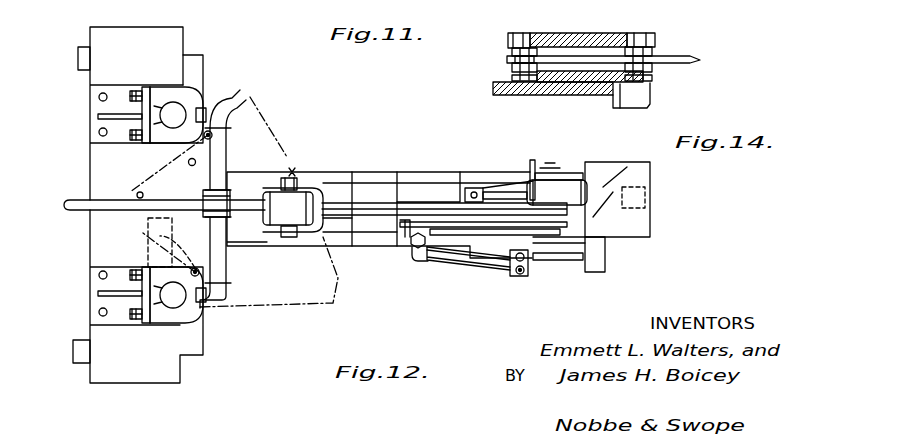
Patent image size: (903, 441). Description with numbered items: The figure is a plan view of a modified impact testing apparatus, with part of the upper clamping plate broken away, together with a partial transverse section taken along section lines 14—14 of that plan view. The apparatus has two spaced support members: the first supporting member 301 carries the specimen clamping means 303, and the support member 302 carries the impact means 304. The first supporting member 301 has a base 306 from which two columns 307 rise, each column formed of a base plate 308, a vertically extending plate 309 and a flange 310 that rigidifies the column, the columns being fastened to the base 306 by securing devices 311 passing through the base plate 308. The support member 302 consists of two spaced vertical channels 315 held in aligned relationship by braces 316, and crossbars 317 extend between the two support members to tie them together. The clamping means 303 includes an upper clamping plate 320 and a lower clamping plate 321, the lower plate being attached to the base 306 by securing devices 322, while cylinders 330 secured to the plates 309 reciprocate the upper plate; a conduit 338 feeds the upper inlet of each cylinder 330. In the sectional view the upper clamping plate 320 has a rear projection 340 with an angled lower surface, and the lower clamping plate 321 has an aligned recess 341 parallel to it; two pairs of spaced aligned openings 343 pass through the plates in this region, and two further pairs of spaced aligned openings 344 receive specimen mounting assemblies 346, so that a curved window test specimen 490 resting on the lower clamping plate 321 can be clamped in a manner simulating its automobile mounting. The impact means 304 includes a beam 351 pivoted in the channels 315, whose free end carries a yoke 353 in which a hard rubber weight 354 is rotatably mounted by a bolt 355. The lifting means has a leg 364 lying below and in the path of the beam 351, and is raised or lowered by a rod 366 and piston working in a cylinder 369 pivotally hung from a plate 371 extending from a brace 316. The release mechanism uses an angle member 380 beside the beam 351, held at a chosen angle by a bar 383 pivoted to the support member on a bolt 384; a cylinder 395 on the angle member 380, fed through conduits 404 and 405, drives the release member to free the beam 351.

In FIG. 12, the section lines 14— 14 is at (117, 217).
In FIG. 12, the first supporting member 301 is at (87, 222).
In FIG. 12, the support member 302 is at (612, 252).
In FIG. 12, the specimen clamping means 303 is at (191, 80).
In FIG. 12, the impact means 304 is at (432, 169).
In FIG. 12, the base 306 is at (118, 50).
In FIG. 12, the columns 307 is at (96, 107).
In FIG. 12, the base plate 308 is at (115, 136).
In FIG. 12, the vertically extending plate 309 is at (128, 134).
In FIG. 12, the flange 310 is at (100, 117).
In FIG. 12, the securing devices 311 is at (99, 96).
In FIG. 12, the channels 315 is at (537, 172).
In FIG. 12, the braces 316 is at (597, 258).
In FIG. 12, the crossbars 317 is at (422, 190).
In FIG. 14, the upper clamping plate 320 is at (592, 23).
In FIG. 12, the lower clamping plate 321 is at (167, 236).
In FIG. 14, the lower clamping plate 321 is at (578, 80).
In FIG. 12, the securing devices 322 is at (197, 162).
In FIG. 12, the cylinders 330 is at (195, 100).
In FIG. 12, the conduit 338 is at (228, 140).
In FIG. 14, the projection 340 is at (513, 40).
In FIG. 14, the recess 341 is at (520, 68).
In FIG. 12, the spaced aligned openings 343 is at (143, 196).
In FIG. 14, the spaced aligned openings 343 is at (540, 23).
In FIG. 14, the spaced aligned openings 344 is at (655, 23).
In FIG. 12, the specimen mounting assemblies 346 is at (211, 131).
In FIG. 14, the specimen mounting assemblies 346 is at (514, 53).
In FIG. 12, the beam 351 is at (368, 208).
In FIG. 12, the yoke 353 is at (313, 192).
In FIG. 12, the weight 354 is at (288, 213).
In FIG. 12, the bolt 355 is at (291, 176).
In FIG. 12, the leg 364 is at (477, 254).
In FIG. 12, the rod 366 is at (495, 192).
In FIG. 12, the cylinder 369 is at (570, 193).
In FIG. 12, the plate 371 is at (624, 218).
In FIG. 12, the angle member 380 is at (458, 226).
In FIG. 12, the bar 383 is at (528, 271).
In FIG. 12, the bolt 384 is at (437, 248).
In FIG. 12, the cylinder 395 is at (412, 259).
In FIG. 12, the conduit 404 is at (519, 275).
In FIG. 12, the conduit 405 is at (508, 276).
In FIG. 12, the test specimen 490 is at (342, 287).
In FIG. 14, the test specimen 490 is at (698, 60).